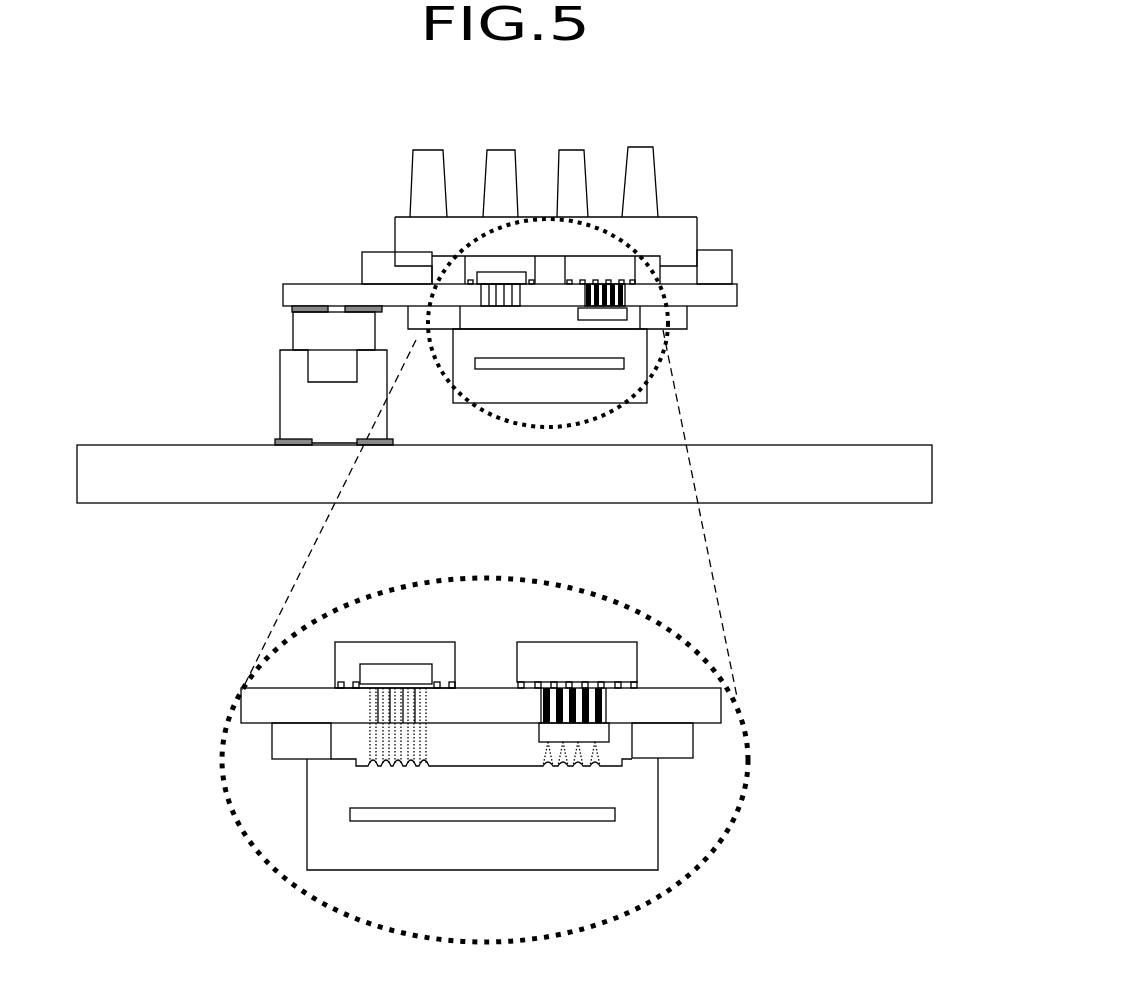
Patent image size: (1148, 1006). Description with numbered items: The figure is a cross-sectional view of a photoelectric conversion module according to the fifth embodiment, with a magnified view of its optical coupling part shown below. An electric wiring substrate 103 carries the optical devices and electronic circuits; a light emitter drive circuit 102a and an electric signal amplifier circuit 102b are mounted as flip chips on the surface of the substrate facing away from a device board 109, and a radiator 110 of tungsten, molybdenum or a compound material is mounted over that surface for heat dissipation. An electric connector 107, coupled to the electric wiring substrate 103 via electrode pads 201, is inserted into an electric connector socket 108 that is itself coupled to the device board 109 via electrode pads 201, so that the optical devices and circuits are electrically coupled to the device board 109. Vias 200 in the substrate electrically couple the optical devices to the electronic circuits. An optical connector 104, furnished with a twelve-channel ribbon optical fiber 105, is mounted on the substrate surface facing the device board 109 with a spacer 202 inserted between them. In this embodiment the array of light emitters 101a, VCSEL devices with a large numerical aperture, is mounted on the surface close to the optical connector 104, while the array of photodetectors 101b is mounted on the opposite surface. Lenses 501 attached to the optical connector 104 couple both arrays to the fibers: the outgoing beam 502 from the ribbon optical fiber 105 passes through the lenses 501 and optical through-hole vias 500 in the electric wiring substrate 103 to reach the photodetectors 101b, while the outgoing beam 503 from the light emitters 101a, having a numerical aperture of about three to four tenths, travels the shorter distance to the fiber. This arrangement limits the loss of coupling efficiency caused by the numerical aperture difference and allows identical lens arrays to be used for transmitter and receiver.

The array of light emitters 101a is at (663, 330).
The array of photodetectors 101b is at (500, 270).
The light emitter drive circuit 102a is at (617, 267).
The electric signal amplifier circuit 102b is at (482, 262).
The electric wiring substrate 103 is at (350, 295).
The optical connector 104 is at (633, 377).
The ribbon optical fiber 105 is at (515, 370).
The electric connector 107 is at (302, 341).
The electric connector socket 108 is at (298, 413).
The device board 109 is at (160, 463).
The radiator 110 is at (413, 240).
The vias 200 is at (623, 295).
The electrode pads 201 is at (302, 306).
The spacer 202 is at (692, 315).
The optical through-hole vias 500 is at (482, 312).
The lenses 501 is at (378, 770).
The outgoing beam from the ribbon optical fiber 502 is at (364, 742).
The outgoing beam from the VCSEL 503 is at (543, 752).